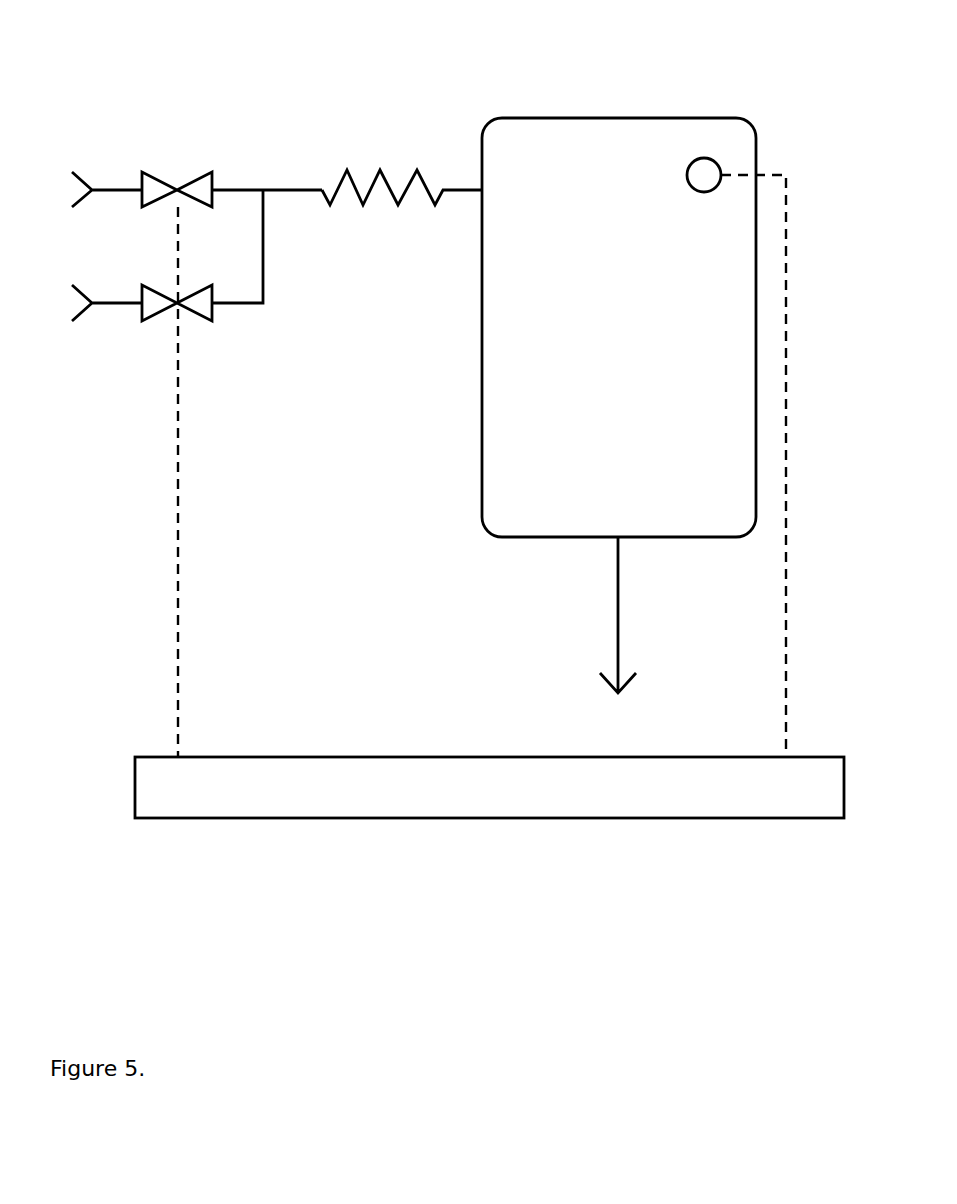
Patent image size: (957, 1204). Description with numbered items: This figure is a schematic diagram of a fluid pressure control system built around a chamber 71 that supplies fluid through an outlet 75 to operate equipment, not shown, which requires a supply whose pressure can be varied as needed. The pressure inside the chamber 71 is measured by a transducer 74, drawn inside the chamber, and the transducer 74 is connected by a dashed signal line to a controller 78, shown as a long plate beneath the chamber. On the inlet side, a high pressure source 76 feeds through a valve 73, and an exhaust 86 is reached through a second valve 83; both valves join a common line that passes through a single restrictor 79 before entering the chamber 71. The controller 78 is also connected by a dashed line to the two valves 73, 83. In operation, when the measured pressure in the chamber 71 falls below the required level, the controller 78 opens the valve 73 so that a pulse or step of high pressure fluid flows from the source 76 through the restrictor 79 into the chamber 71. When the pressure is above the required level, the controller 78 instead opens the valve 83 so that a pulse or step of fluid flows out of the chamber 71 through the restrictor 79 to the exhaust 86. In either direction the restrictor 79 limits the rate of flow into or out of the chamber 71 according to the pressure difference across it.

The chamber 71 is at (588, 145).
The valve 73 is at (153, 187).
The transducer 74 is at (700, 173).
The outlet 75 is at (618, 632).
The source 76 is at (90, 189).
The controller 78 is at (223, 785).
The restrictor 79 is at (357, 188).
The valve 83 is at (153, 312).
The exhaust 86 is at (90, 303).